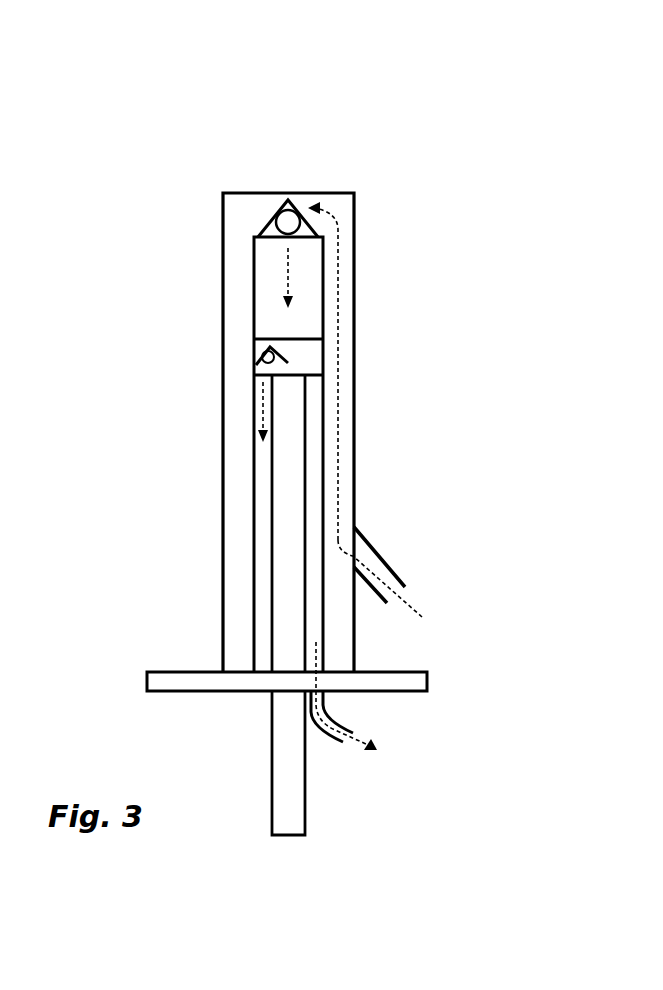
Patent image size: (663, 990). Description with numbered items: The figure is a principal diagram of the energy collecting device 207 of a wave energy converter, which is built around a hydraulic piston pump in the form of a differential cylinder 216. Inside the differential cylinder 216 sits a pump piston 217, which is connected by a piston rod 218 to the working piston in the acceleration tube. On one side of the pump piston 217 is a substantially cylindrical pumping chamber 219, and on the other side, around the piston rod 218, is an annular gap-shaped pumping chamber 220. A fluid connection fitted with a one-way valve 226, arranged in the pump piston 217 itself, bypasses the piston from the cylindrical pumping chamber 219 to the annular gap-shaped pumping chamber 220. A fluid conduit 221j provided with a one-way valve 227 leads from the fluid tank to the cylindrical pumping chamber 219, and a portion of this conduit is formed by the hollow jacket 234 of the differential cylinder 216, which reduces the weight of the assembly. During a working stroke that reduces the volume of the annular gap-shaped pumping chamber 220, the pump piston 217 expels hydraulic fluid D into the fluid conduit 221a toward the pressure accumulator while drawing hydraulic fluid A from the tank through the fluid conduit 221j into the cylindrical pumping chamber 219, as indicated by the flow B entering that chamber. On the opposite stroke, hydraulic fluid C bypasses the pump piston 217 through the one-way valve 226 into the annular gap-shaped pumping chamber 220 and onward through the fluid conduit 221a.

The energy collecting device 207 is at (173, 134).
The differential cylinder 216 is at (369, 254).
The substantially cylindrical pumping chamber 219 is at (272, 322).
The one-way valve 227 is at (275, 222).
The pump piston 217 is at (266, 334).
The one-way valve 226 is at (258, 357).
The annular gap-shaped pumping chamber 220 is at (263, 495).
The piston rod 218 is at (272, 758).
The hollow jacket 234 is at (355, 405).
The fluid conduit 221j is at (390, 565).
The fluid conduit 221a is at (335, 722).
The flow direction B is at (288, 258).
The hydraulic fluid C is at (260, 398).
The hydraulic fluid A is at (418, 610).
The hydraulic fluid D is at (360, 743).